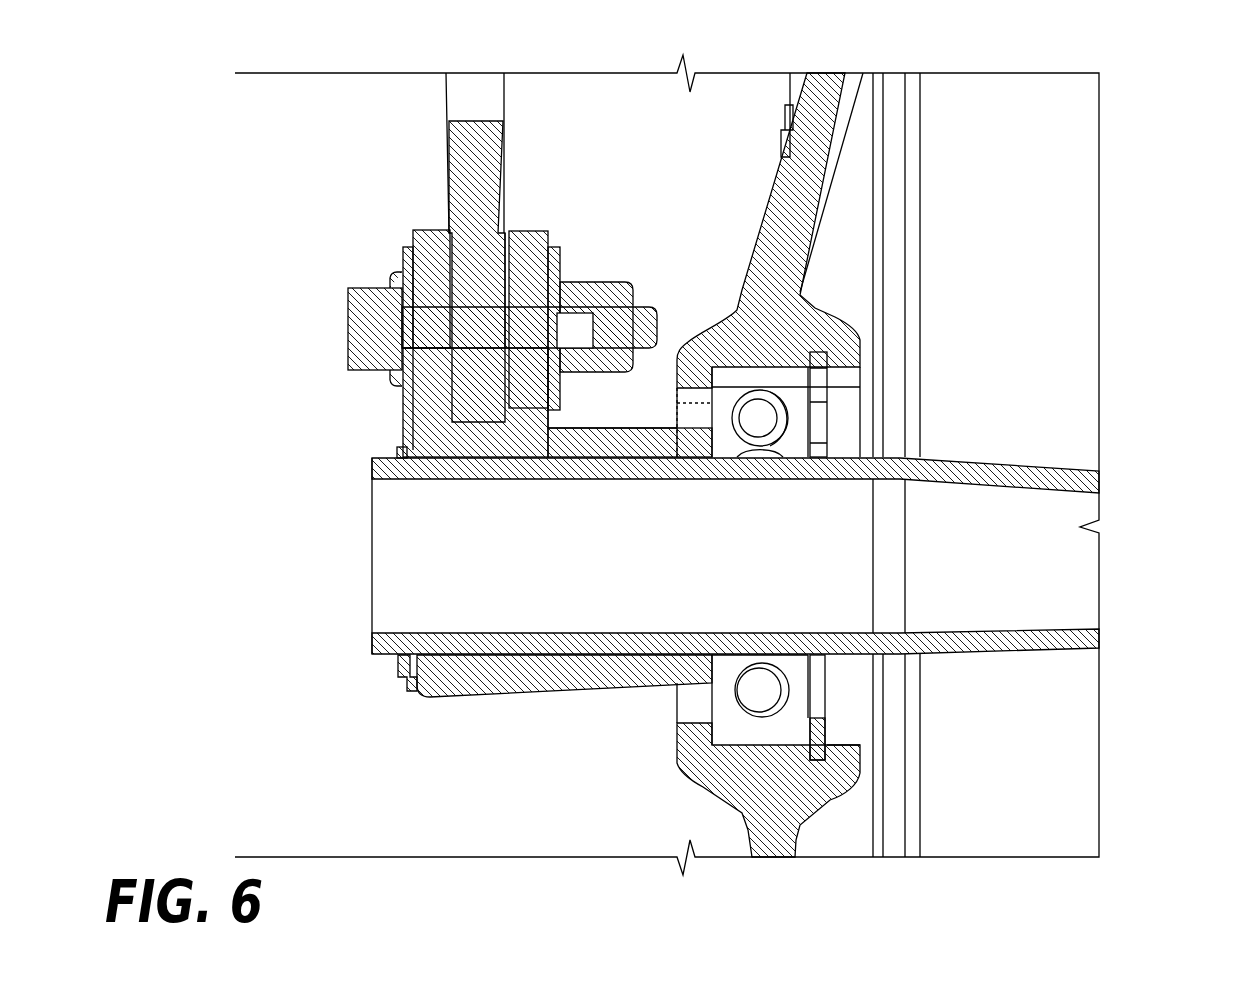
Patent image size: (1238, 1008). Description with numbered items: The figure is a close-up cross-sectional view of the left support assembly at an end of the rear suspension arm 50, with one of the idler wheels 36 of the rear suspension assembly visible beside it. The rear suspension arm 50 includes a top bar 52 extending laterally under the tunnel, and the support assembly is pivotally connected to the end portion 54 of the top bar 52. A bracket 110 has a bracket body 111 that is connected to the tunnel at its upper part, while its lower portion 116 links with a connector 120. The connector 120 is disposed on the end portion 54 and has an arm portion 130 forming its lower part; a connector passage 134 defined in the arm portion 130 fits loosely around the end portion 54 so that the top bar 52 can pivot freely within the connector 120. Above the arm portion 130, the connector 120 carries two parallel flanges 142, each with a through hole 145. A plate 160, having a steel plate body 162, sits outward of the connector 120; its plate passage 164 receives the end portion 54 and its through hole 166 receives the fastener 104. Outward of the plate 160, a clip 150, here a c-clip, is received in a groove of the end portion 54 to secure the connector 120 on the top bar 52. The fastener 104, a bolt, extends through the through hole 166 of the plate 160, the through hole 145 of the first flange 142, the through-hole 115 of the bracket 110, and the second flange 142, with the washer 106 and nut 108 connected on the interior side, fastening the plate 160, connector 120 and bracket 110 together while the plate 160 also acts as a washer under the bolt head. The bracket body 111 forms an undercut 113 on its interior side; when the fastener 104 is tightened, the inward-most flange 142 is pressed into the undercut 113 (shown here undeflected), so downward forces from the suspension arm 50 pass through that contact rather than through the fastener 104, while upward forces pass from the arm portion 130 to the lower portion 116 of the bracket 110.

The idler wheel 36 is at (808, 222).
The rear suspension arm 50 is at (787, 524).
The top bar 52 is at (1062, 482).
The end portion 54 is at (370, 611).
The fastener 104 is at (338, 317).
The washer 106 is at (570, 277).
The nut 108 is at (646, 297).
The bracket 110 is at (519, 212).
The bracket body 111 is at (479, 100).
The undercut 113 is at (510, 227).
The through-hole 115 is at (458, 337).
The lower portion 116 is at (462, 289).
The connector 120 is at (398, 737).
The arm portion 130 is at (500, 694).
The connector passage 134 is at (508, 505).
The flange 142 is at (428, 228).
The through hole 145 is at (410, 337).
The clip 150 is at (378, 672).
The plate 160 is at (398, 413).
The plate body 162 is at (403, 230).
The plate passage 164 is at (420, 558).
The through hole 166 is at (395, 308).